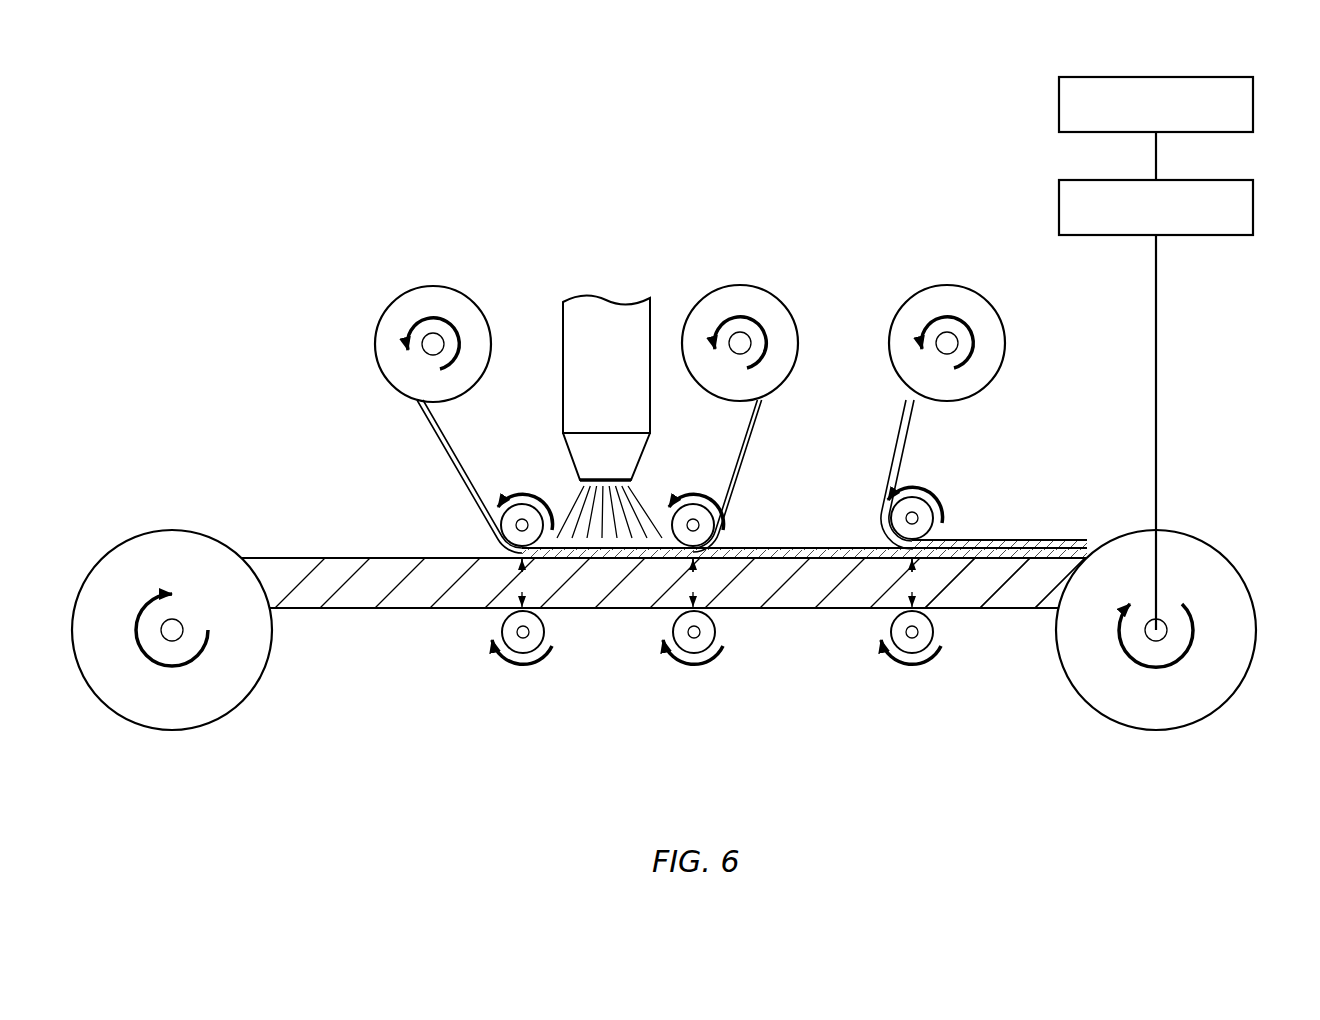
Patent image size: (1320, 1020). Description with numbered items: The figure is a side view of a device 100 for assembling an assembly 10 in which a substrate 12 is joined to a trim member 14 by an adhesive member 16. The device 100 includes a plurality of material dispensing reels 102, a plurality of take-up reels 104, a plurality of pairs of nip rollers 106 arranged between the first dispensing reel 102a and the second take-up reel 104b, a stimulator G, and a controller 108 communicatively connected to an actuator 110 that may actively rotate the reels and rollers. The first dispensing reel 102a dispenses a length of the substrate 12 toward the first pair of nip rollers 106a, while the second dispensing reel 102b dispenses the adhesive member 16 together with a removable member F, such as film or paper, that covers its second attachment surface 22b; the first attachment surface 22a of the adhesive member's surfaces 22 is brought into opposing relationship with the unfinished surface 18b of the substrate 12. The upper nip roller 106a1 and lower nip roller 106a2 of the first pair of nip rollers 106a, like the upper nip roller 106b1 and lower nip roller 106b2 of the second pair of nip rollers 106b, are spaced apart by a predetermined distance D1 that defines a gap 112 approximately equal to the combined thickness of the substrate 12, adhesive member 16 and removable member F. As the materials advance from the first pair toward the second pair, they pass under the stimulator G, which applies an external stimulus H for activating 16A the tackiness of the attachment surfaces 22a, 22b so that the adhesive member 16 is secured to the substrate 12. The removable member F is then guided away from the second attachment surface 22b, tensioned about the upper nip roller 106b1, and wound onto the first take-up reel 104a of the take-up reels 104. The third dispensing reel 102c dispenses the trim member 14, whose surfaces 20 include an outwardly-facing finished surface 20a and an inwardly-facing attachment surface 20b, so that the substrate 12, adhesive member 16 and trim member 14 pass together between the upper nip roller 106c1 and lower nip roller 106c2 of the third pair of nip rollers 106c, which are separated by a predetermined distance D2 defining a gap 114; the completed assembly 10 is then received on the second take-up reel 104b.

The device 100 is at (188, 187).
The plurality of material dispensing reels 102 is at (456, 207).
The first dispensing reel 102a is at (157, 523).
The second dispensing reel 102b is at (391, 296).
The third dispensing reel 102c is at (897, 300).
The plurality of take-up reels 104 is at (928, 191).
The first take-up reel 104a is at (770, 285).
The second take-up reel 104b is at (1137, 515).
The plurality of pairs of nip rollers 106 is at (775, 751).
The first pair of nip rollers 106a is at (533, 668).
The second pair of nip rollers 106b is at (708, 668).
The third pair of nip rollers 106c is at (892, 668).
The upper nip roller 106a1 is at (520, 491).
The lower nip roller 106a2 is at (507, 668).
The upper nip roller 106b1 is at (683, 491).
The lower nip roller 106b2 is at (681, 668).
The upper nip roller 106c1 is at (950, 500).
The lower nip roller 106c2 is at (930, 665).
The controller 108 is at (1240, 77).
The actuator 110 is at (1240, 180).
The gap 112 is at (505, 577).
The gap 114 is at (893, 577).
The assembly 10 is at (1079, 432).
The substrate 12 is at (1008, 578).
The trim member 14 is at (988, 540).
The adhesive member 16 is at (998, 550).
The activating 16A is at (597, 557).
The unfinished surface 18b is at (330, 558).
The surfaces 20 is at (835, 402).
The outwardly-facing finished surface 20a is at (916, 416).
The inwardly-facing attachment surface 20b is at (896, 452).
The surfaces 22 is at (372, 428).
The first attachment surface 22a is at (430, 423).
The second attachment surface 22b is at (443, 444).
The predetermined distance D1 is at (610, 583).
The predetermined distance D2 is at (914, 583).
The removable member F is at (746, 441).
The stimulator G is at (561, 345).
The external stimulus H is at (571, 502).